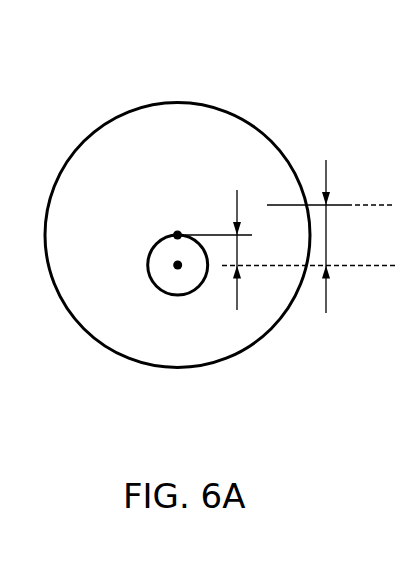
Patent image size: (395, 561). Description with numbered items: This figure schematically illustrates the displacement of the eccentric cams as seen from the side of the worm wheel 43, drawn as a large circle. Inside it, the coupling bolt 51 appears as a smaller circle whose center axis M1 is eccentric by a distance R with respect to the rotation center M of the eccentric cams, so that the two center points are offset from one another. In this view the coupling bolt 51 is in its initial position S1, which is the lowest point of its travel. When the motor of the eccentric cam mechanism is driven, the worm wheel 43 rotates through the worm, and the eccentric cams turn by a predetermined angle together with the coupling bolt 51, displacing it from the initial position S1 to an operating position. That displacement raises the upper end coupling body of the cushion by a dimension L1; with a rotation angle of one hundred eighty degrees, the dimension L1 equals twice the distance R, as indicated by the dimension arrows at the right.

The worm wheel 43 is at (147, 350).
The coupling bolt 51 is at (163, 263).
The rotation center M is at (178, 233).
The center axis M1 is at (178, 267).
The initial position S1 is at (127, 215).
The distance R is at (237, 252).
The dimension L1 is at (323, 238).